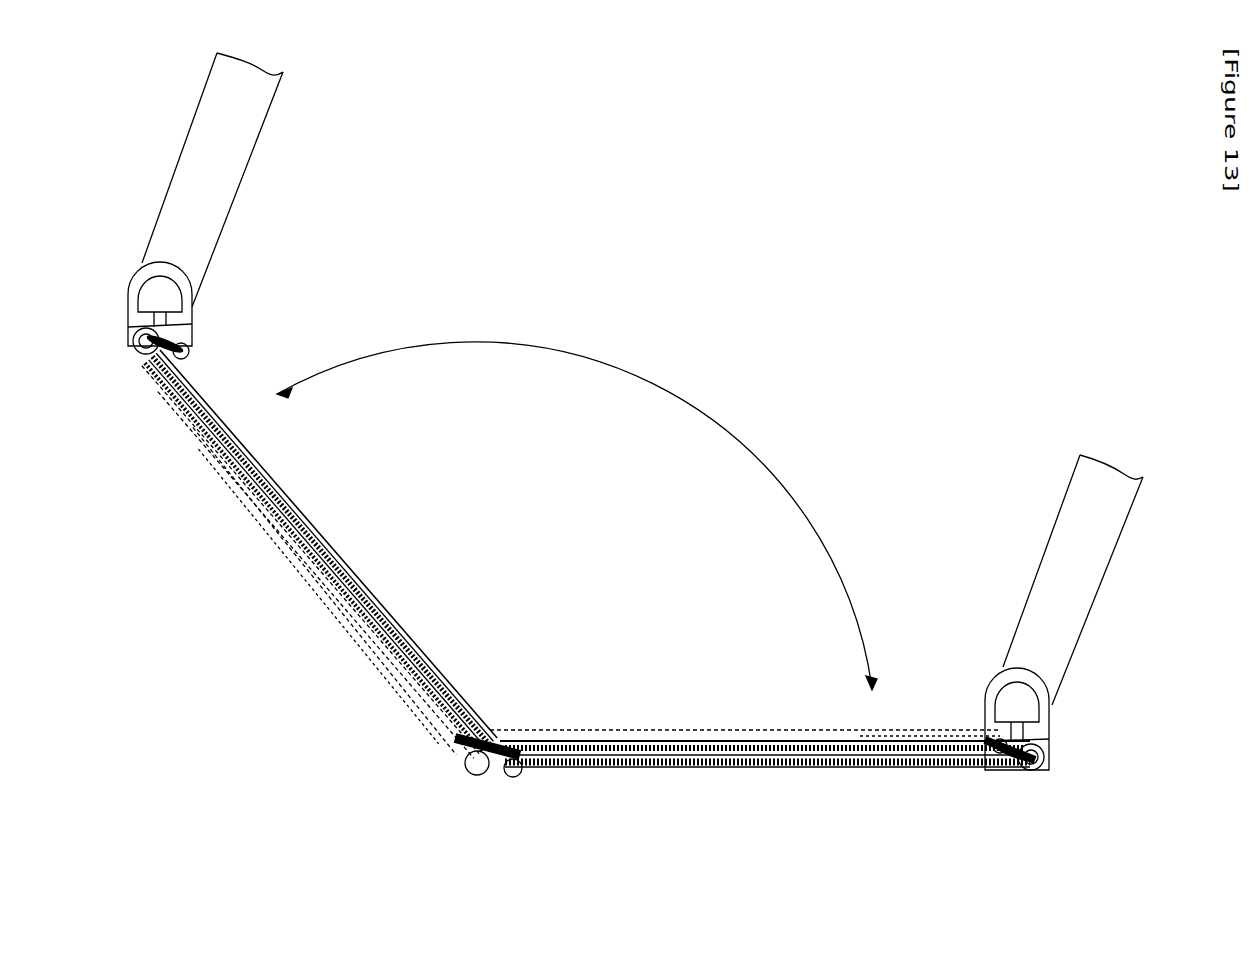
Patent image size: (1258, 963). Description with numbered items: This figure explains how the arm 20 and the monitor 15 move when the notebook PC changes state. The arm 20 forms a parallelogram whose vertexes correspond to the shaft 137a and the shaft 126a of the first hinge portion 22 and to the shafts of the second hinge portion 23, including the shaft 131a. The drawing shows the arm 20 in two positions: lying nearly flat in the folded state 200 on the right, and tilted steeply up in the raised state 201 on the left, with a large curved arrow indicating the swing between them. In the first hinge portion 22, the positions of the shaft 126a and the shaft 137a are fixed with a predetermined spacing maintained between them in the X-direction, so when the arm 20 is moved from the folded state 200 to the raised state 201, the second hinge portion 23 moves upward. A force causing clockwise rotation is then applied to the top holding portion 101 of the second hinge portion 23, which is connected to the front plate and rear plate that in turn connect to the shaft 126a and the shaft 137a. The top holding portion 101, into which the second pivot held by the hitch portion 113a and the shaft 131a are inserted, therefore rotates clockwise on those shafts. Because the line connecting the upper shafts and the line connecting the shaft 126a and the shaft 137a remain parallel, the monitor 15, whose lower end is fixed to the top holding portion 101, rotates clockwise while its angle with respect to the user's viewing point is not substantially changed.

The monitor 15 is at (247, 138).
The arm 20 is at (288, 518).
The first hinge portion 22 is at (489, 778).
The second hinge portion 23 is at (130, 293).
The top holding portion 101 is at (193, 323).
The hitch portion 113a is at (150, 345).
The shaft 126a is at (462, 753).
The shaft 131a is at (193, 352).
The shaft 137a is at (513, 780).
The folded state 200 is at (972, 574).
The raised state 201 is at (318, 269).